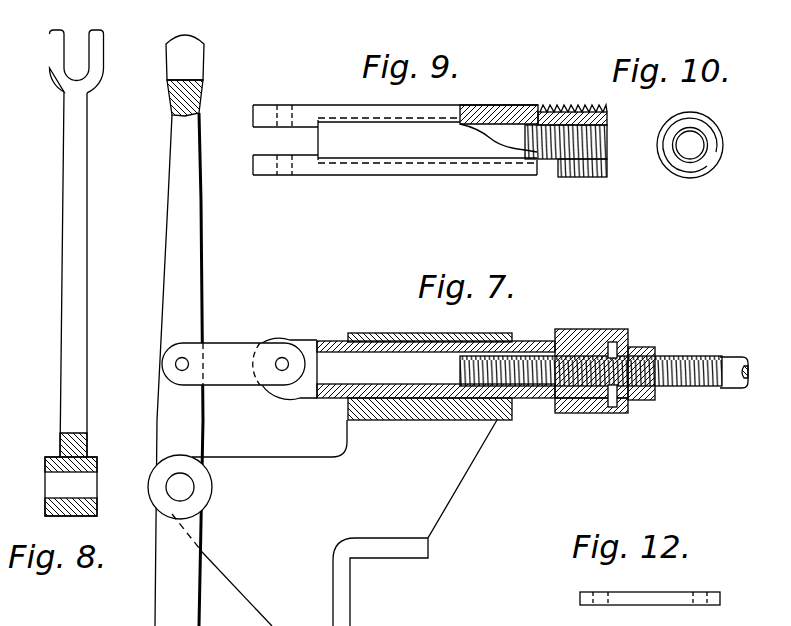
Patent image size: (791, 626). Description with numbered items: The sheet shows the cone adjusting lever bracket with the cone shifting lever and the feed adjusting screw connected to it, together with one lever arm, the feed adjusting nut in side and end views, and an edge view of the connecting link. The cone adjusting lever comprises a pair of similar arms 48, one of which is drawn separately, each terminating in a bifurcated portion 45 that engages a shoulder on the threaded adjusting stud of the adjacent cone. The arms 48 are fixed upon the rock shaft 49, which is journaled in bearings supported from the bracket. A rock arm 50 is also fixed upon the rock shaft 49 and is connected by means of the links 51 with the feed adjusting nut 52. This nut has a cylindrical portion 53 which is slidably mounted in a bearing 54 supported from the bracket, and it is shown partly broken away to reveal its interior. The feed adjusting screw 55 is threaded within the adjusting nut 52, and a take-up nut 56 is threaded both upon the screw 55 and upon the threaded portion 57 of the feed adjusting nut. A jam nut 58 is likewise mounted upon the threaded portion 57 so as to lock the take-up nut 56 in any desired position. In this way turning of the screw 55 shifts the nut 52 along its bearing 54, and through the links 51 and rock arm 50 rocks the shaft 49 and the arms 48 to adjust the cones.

In FIG. 8, the bifurcated portion 45 is at (100, 51).
In FIG. 7, the bifurcated portion 45 is at (200, 52).
In FIG. 8, the arms 48 is at (86, 252).
In FIG. 7, the arms 48 is at (196, 253).
In FIG. 7, the rock shaft 49 is at (196, 487).
In FIG. 7, the rock arm 50 is at (196, 418).
In FIG. 7, the links 51 is at (230, 347).
In FIG. 12, the links 51 is at (637, 591).
In FIG. 7, the feed adjusting nut 52 is at (321, 343).
In FIG. 9, the feed adjusting nut 52 is at (386, 176).
In FIG. 7, the cylindrical portion 53 is at (381, 336).
In FIG. 9, the cylindrical portion 53 is at (440, 150).
In FIG. 7, the bearing 54 is at (452, 326).
In FIG. 7, the feed adjusting screw 55 is at (722, 357).
In FIG. 7, the take-up nut 56 is at (632, 333).
In FIG. 7, the threaded portion 57 is at (585, 414).
In FIG. 9, the threaded portion 57 is at (586, 180).
In FIG. 7, the jam nut 58 is at (575, 326).